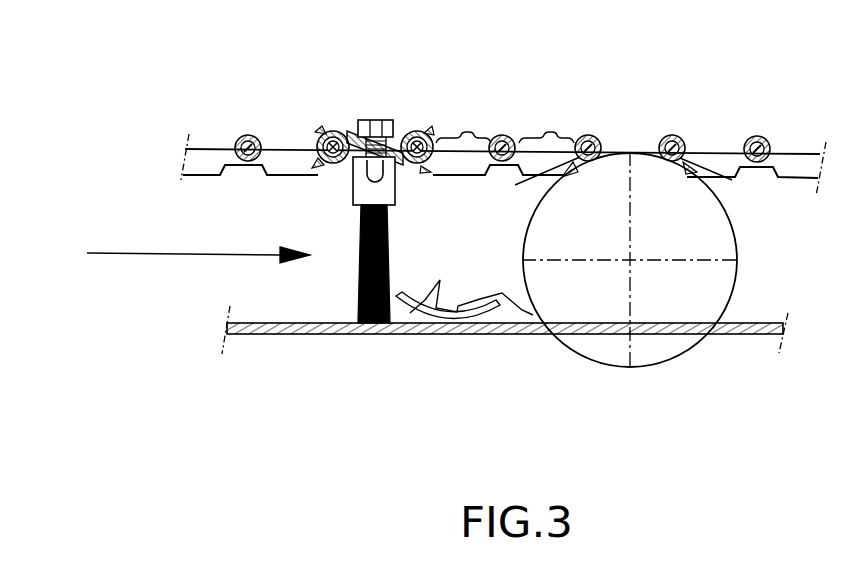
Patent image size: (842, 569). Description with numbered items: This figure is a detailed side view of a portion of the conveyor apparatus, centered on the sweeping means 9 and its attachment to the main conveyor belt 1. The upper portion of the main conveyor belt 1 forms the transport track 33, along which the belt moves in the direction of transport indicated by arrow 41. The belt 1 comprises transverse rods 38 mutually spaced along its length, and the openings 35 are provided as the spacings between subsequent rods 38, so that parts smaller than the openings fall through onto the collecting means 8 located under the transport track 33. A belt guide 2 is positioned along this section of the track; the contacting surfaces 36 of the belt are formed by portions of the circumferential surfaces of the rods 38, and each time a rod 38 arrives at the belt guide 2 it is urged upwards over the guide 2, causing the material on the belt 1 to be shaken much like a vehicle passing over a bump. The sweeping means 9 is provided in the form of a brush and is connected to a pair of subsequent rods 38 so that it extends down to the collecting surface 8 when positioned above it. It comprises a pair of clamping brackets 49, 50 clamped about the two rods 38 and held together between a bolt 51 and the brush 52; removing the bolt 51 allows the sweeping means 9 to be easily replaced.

The main conveyor belt 1 is at (237, 133).
The belt guide 2 is at (739, 252).
The collecting means 8 is at (758, 323).
The sweeping means 9 is at (358, 242).
The transport track 33 is at (601, 126).
The openings 35 is at (545, 137).
The contacting surfaces 36 is at (573, 160).
The transverse rods 38 is at (752, 137).
The direction of transport 41 is at (181, 252).
The clamping bracket 49 is at (327, 128).
The clamping bracket 50 is at (418, 173).
The bolt 51 is at (376, 120).
The brush 52 is at (358, 190).